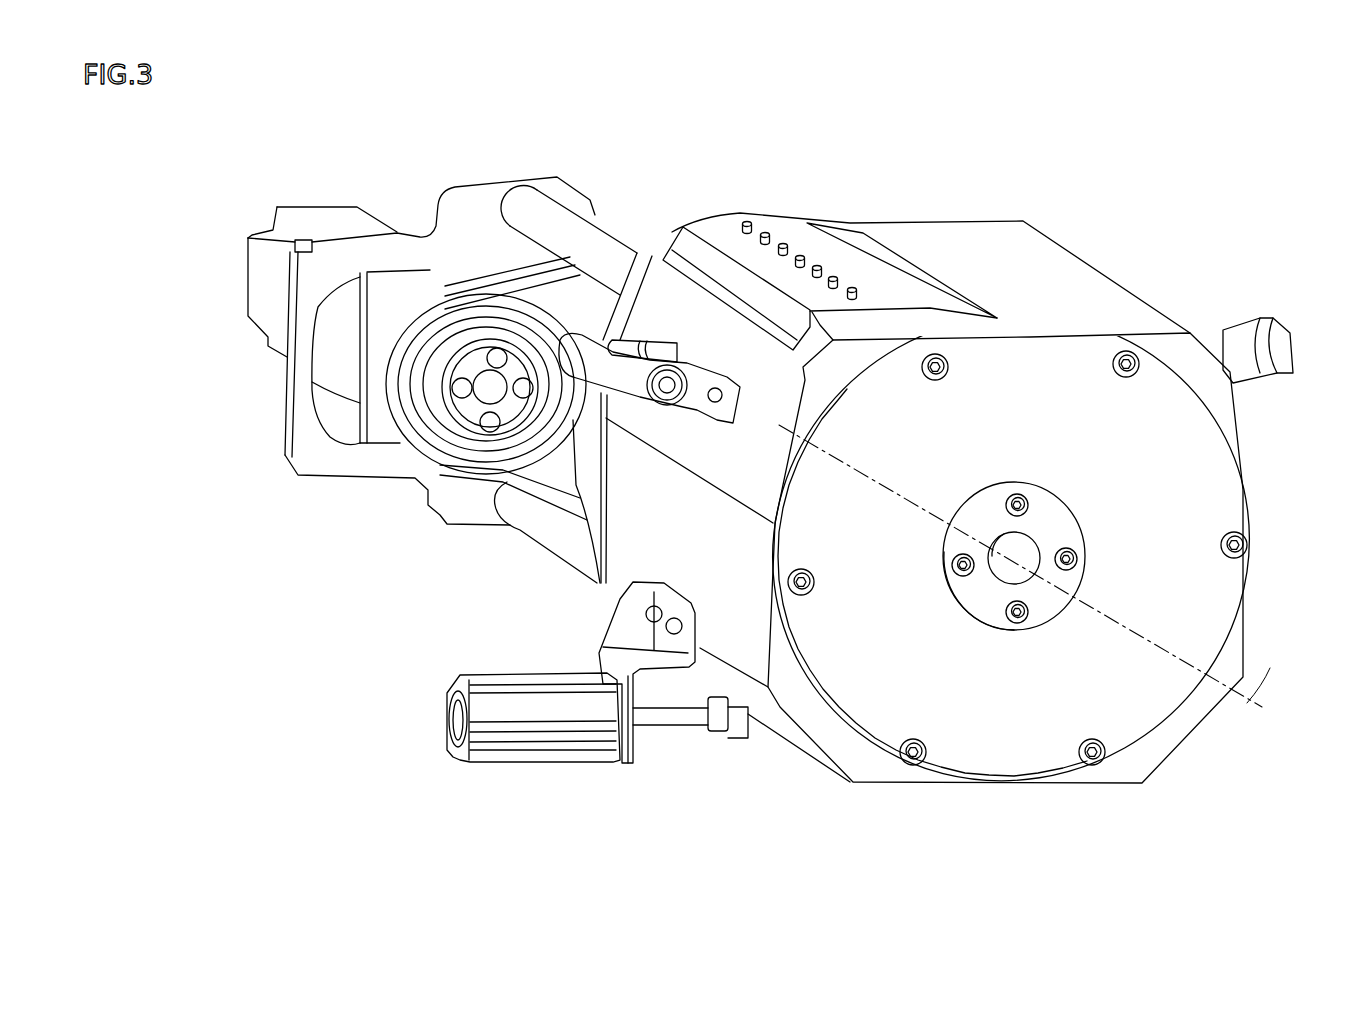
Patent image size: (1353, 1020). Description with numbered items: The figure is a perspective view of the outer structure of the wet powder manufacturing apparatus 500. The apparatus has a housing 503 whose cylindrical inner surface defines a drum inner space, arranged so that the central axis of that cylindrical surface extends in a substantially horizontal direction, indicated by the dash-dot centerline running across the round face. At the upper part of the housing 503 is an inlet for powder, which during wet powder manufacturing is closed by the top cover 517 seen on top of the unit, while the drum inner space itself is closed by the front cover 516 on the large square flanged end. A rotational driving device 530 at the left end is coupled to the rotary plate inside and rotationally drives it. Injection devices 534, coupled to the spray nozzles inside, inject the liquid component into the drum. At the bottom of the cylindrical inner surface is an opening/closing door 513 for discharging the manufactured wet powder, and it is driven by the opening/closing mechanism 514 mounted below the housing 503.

The wet powder manufacturing apparatus 500 is at (1158, 245).
The housing 503 is at (1197, 711).
The opening/closing door 513 is at (815, 770).
The opening/closing mechanism 514 is at (523, 760).
The front cover 516 is at (1133, 713).
The top cover 517 is at (798, 240).
The rotational driving device 530 is at (350, 488).
The injection devices 534 is at (655, 338).